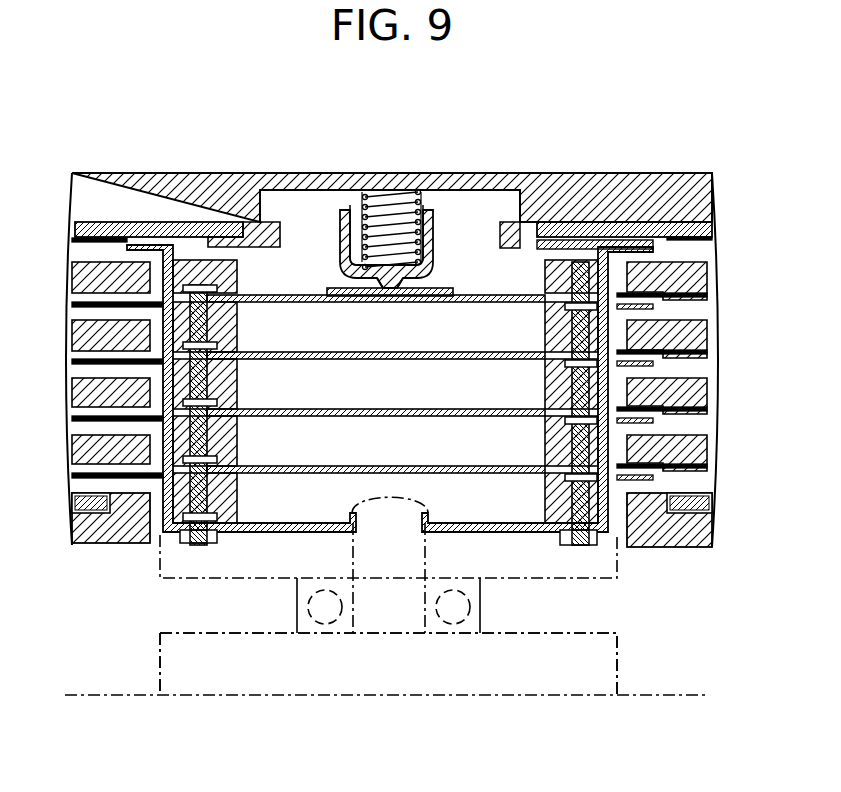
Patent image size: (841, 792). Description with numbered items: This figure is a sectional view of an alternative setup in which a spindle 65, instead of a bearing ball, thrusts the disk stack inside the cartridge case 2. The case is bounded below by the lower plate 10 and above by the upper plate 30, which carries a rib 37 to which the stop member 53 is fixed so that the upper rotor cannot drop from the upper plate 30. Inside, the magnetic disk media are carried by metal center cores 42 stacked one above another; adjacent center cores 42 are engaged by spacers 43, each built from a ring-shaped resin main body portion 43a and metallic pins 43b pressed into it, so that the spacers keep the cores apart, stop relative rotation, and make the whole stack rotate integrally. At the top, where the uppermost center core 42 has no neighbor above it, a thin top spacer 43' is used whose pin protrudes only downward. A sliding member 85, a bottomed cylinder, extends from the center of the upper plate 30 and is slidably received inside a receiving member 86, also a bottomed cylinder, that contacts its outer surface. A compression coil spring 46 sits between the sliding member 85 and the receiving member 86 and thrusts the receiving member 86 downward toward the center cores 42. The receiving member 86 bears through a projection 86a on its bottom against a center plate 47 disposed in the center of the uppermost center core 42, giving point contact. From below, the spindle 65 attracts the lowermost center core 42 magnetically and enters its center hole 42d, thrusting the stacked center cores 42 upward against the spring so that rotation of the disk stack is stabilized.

The cartridge case 2 is at (503, 90).
The upper plate 30 is at (104, 170).
The rib 37 is at (262, 226).
The lower plate 10 is at (88, 550).
The center core 42 is at (528, 590).
The center hole 42d is at (400, 507).
The spindle 65 is at (618, 607).
The top spacer 43' is at (385, 277).
The main body portion 43a is at (233, 300).
The pin 43b is at (210, 328).
The spacer 43 is at (376, 412).
The receiving member 86 is at (339, 240).
The sliding member 85 is at (430, 250).
The compression coil spring 46 is at (370, 194).
The projection 86a is at (388, 290).
The center plate 47 is at (470, 288).
The stop member 53 is at (580, 243).